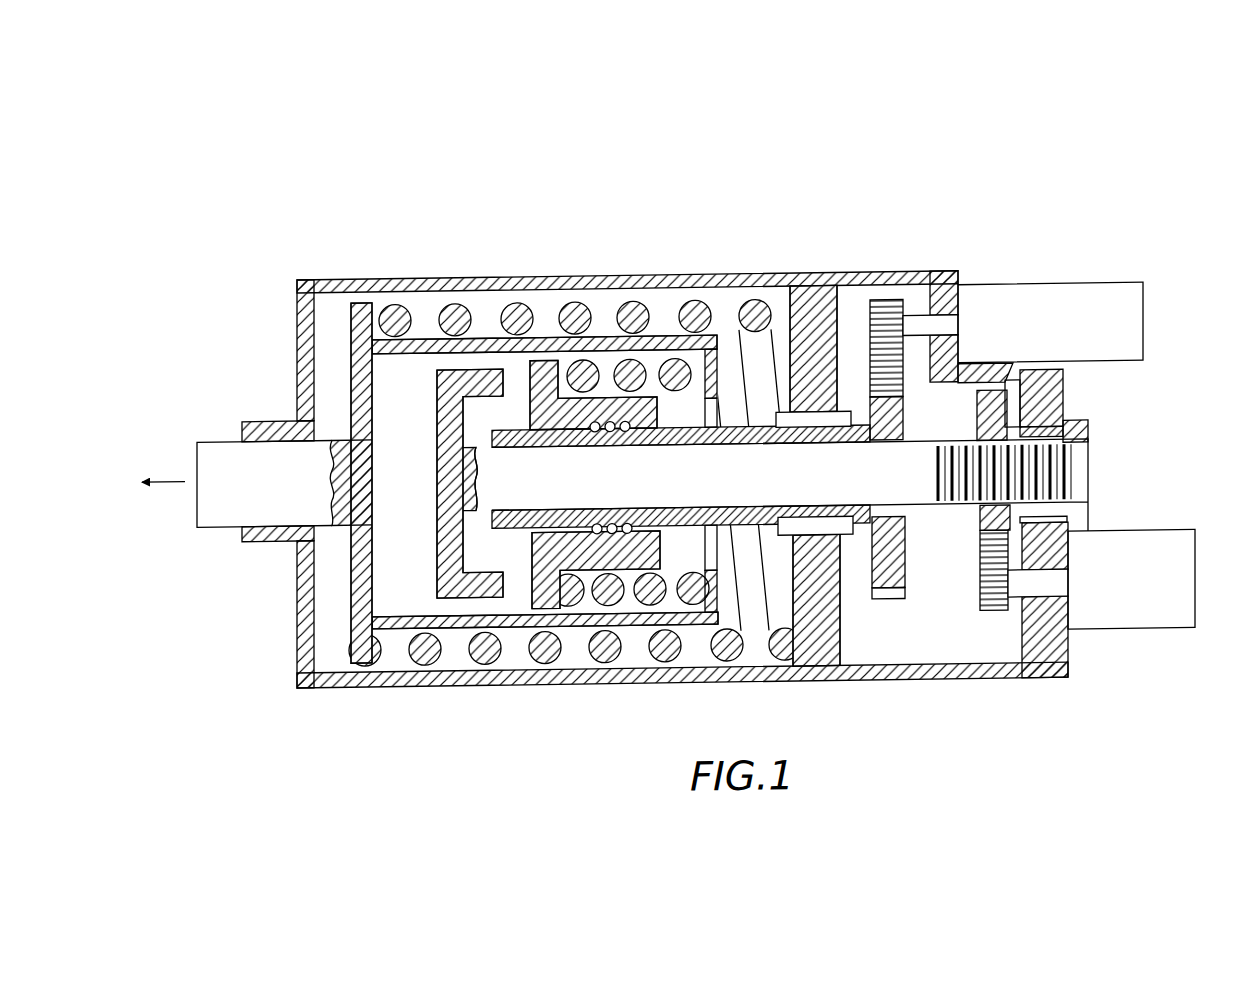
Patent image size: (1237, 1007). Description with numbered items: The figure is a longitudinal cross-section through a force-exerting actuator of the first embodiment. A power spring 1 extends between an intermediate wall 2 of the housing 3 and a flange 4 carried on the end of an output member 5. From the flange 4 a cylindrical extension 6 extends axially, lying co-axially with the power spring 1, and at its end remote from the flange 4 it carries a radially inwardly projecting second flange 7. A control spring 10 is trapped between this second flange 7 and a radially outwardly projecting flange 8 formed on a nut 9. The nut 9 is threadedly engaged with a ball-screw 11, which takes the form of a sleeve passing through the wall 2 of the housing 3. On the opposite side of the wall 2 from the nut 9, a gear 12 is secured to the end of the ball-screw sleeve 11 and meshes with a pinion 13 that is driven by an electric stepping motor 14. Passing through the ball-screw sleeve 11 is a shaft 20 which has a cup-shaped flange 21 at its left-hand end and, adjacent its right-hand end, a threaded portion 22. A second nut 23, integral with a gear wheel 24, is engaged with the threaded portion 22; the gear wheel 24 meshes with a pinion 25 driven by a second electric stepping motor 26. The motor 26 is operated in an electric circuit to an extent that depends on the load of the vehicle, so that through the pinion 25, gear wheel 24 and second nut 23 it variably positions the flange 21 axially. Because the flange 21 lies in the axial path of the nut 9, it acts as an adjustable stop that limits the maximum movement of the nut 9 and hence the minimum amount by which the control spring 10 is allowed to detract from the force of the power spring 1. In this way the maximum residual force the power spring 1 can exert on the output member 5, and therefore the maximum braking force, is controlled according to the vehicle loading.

The power spring 1 is at (654, 304).
The intermediate wall 2 is at (808, 326).
The housing 3 is at (513, 278).
The flange 4 is at (353, 601).
The output member 5 is at (236, 502).
The cylindrical extension 6 is at (515, 628).
The second flange 7 is at (710, 596).
The flange 8 is at (548, 603).
The nut 9 is at (632, 412).
The control spring 10 is at (584, 388).
The ball-screw 11 is at (723, 447).
The gear 12 is at (889, 564).
The pinion 13 is at (885, 328).
The electric stepping motor 14 is at (1026, 328).
The shaft 20 is at (808, 491).
The cup-shaped flange 21 is at (471, 594).
The threaded portion 22 is at (1052, 482).
The second nut 23 is at (1062, 518).
The gear wheel 24 is at (1021, 400).
The pinion 25 is at (986, 622).
The second electric stepping motor 26 is at (1151, 563).